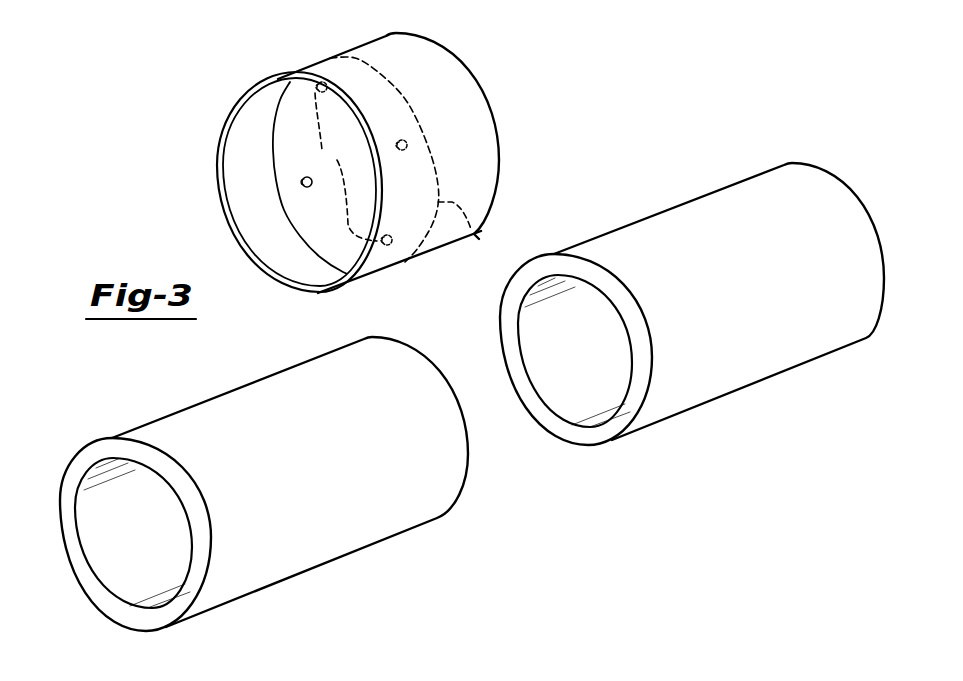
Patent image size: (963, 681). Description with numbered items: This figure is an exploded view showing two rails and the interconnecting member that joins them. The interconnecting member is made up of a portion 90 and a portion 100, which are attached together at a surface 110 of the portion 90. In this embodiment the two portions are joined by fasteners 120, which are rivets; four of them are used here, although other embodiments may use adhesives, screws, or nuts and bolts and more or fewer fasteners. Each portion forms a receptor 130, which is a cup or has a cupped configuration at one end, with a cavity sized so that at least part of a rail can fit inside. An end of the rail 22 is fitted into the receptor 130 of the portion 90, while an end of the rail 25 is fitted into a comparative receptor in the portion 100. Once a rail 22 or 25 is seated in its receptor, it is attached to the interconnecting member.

The rail 22 is at (237, 407).
The rail 25 is at (665, 227).
The portion 90 is at (293, 72).
The portion 100 is at (358, 47).
The surface 110 is at (478, 237).
The fasteners 120 is at (398, 147).
The receptor 130 is at (250, 149).